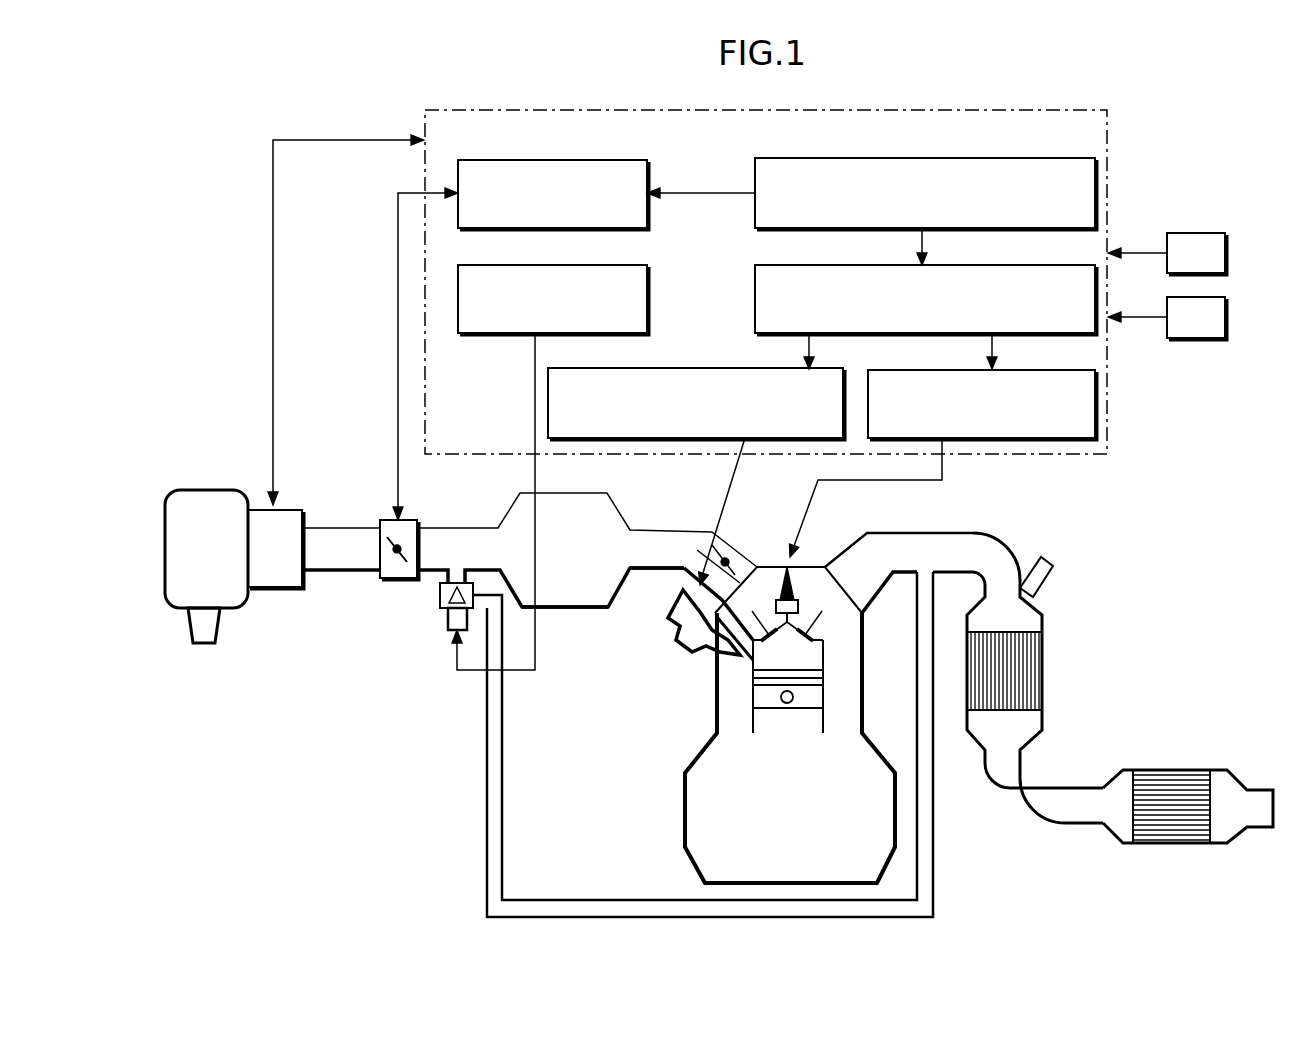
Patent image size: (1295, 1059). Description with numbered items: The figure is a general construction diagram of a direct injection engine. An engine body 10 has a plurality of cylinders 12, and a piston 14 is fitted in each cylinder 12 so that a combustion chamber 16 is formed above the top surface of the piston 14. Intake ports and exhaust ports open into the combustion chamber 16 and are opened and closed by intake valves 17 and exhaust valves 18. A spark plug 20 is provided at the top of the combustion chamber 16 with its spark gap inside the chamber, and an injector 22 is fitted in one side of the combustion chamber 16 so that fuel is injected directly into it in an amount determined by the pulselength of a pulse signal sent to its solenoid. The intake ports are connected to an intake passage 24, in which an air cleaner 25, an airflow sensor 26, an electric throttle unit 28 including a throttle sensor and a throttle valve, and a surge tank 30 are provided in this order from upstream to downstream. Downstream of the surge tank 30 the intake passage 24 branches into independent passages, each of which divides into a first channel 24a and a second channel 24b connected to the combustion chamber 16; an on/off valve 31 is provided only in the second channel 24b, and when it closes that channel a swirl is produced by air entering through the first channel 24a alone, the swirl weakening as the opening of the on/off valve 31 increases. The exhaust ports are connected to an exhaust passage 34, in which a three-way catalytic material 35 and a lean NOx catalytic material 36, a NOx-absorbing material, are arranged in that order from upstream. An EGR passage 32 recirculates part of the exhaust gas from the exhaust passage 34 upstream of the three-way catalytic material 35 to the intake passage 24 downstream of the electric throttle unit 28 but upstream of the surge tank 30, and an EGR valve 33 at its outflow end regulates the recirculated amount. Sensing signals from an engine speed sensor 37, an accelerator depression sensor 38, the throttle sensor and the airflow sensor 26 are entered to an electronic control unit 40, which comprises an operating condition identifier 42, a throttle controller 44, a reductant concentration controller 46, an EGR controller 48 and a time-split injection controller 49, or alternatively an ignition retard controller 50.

The engine body 10 is at (717, 722).
The cylinder 12 is at (825, 723).
The piston 14 is at (813, 697).
The combustion chamber 16 is at (813, 660).
The intake valve 17 is at (752, 610).
The exhaust valve 18 is at (827, 632).
The spark plug 20 is at (792, 595).
The injector 22 is at (688, 632).
The intake passage 24 is at (448, 547).
The first channel 24a is at (688, 565).
The second channel 24b is at (737, 565).
The air cleaner 25 is at (173, 530).
The airflow sensor 26 is at (267, 573).
The electric throttle unit 28 is at (395, 573).
The surge tank 30 is at (562, 595).
The on/off valve 31 is at (710, 530).
The EGR passage 32 is at (548, 899).
The EGR valve 33 is at (442, 610).
The exhaust passage 34 is at (993, 550).
The three-way catalytic material 35 is at (1023, 667).
The lean NOx catalytic material 36 is at (1172, 782).
The engine speed sensor 37 is at (1226, 237).
The accelerator depression sensor 38 is at (1226, 300).
The electronic control unit 40 is at (1108, 182).
The operating condition identifier 42 is at (1008, 158).
The throttle controller 44 is at (648, 165).
The reductant concentration controller 46 is at (1012, 265).
The EGR controller 48 is at (648, 288).
The time-split injection controller 49 is at (708, 368).
The ignition retard controller 50 is at (1030, 370).